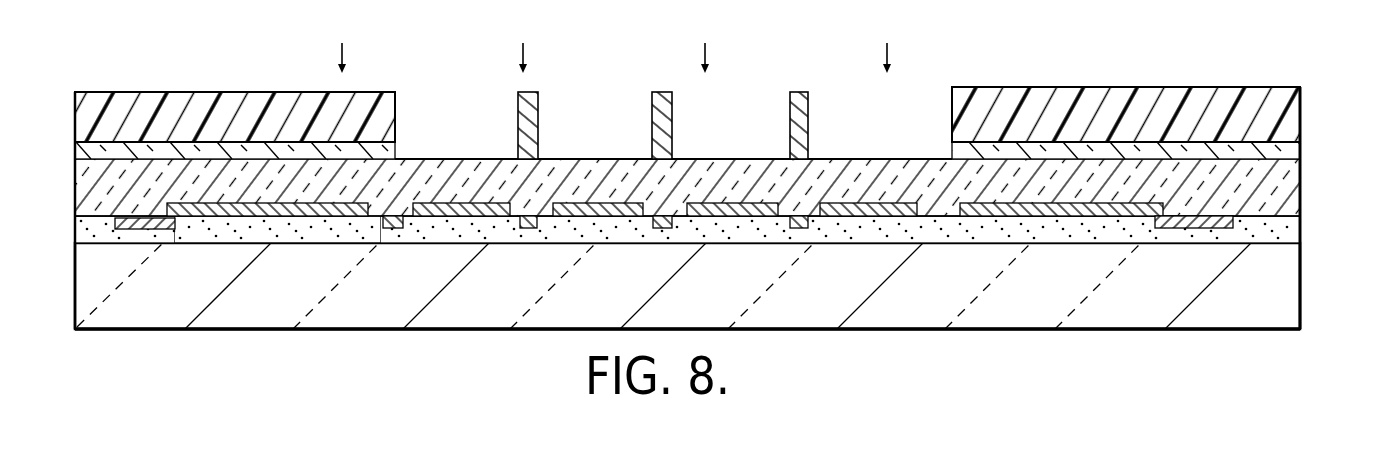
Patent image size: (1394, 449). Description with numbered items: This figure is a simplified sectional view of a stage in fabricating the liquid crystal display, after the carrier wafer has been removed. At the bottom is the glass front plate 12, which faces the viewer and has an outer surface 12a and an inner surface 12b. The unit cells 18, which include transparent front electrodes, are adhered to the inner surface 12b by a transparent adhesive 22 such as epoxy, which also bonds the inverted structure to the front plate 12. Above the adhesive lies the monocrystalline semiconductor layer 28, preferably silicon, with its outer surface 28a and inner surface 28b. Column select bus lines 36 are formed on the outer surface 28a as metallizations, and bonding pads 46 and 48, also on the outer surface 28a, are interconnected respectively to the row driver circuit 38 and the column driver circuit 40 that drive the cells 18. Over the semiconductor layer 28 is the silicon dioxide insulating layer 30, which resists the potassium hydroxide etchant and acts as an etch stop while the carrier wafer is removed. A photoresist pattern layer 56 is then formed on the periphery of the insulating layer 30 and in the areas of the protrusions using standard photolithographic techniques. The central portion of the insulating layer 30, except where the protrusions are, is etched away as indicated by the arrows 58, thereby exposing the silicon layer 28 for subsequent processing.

The glass front plate 12 is at (1293, 286).
The outer surface of front plate 12a is at (1193, 330).
The inner surface of front plate 12b is at (1282, 233).
The unit cells 18 is at (482, 213).
The transparent adhesive 22 is at (210, 232).
The monocrystalline semiconductor layer 28 is at (1302, 177).
The outer surface of semiconductor layer 28a is at (1290, 208).
The inner surface of semiconductor layer 28b is at (1272, 165).
The insulating layer 30 is at (1283, 150).
The column select bus lines 36 is at (403, 230).
The row driver circuit 38 is at (280, 208).
The column driver circuit 40 is at (1028, 216).
The bonding pad 46 is at (167, 229).
The bonding pad 48 is at (1188, 226).
The photoresist pattern layer 56 is at (1303, 100).
The arrows 58 is at (887, 44).